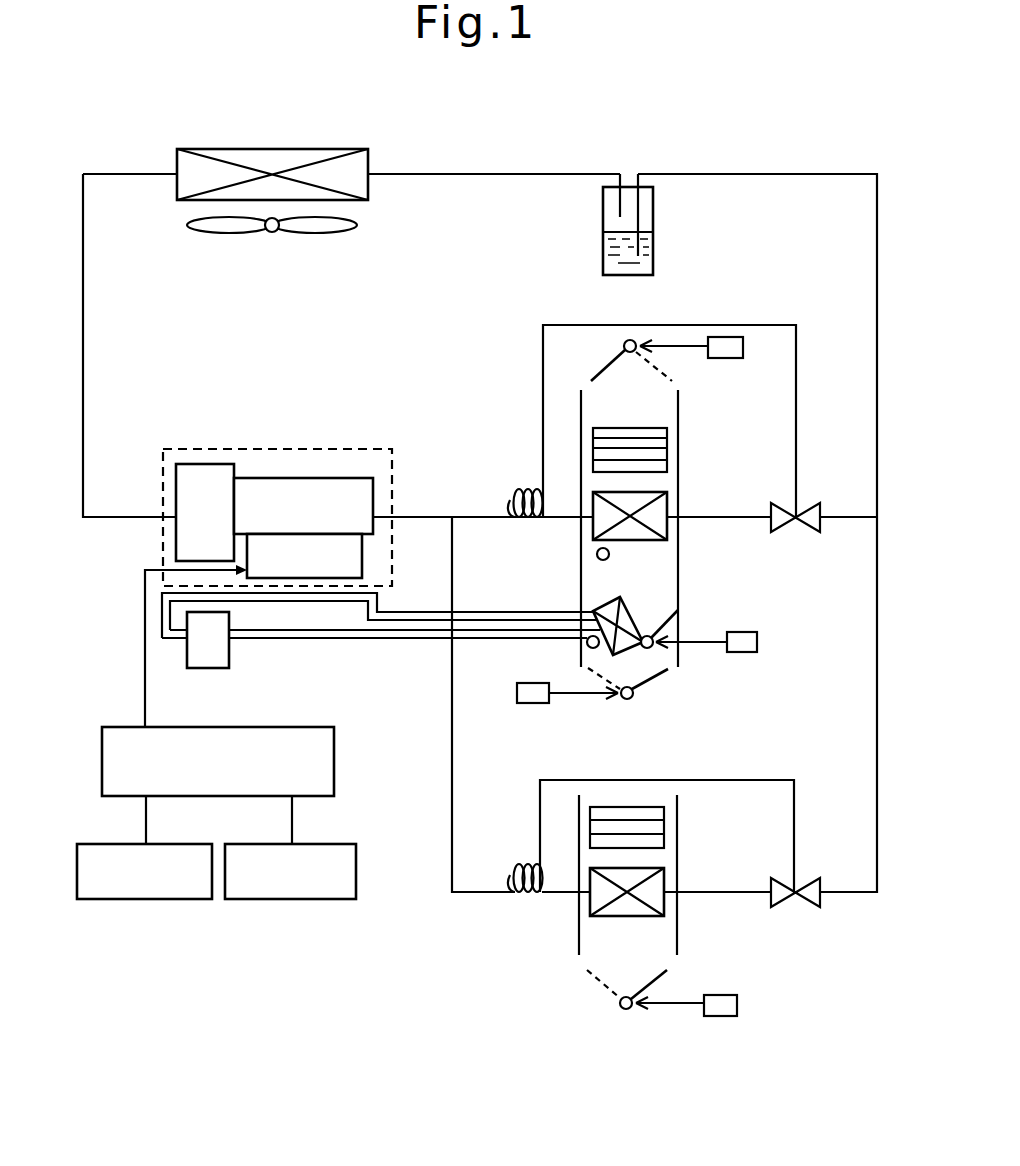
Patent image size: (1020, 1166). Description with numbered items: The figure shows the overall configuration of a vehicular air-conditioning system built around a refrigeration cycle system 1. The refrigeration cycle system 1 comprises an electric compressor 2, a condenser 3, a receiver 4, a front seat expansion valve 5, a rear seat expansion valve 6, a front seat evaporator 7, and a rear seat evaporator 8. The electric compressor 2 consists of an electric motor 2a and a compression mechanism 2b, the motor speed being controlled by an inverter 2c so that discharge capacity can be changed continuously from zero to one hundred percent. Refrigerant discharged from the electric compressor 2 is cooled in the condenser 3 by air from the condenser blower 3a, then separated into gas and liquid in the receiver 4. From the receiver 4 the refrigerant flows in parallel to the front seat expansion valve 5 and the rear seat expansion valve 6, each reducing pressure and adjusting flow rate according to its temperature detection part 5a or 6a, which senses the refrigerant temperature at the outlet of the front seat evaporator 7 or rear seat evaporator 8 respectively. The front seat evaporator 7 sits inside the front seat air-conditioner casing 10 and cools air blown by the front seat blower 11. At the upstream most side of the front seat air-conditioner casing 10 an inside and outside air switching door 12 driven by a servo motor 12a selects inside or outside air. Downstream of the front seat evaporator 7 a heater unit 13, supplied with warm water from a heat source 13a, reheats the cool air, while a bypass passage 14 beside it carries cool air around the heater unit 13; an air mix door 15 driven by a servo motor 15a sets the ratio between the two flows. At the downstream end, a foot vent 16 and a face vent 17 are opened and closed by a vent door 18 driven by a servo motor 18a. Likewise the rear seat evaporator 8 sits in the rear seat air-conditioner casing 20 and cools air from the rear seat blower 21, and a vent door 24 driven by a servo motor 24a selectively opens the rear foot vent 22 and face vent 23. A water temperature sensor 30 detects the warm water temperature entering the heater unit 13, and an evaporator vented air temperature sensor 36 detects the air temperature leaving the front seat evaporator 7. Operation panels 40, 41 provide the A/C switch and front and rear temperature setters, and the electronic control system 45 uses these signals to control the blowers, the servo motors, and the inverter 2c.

The refrigeration cycle system 1 is at (508, 167).
The electric compressor 2 is at (299, 475).
The electric motor 2a is at (302, 478).
The compression mechanism 2b is at (210, 464).
The inverter 2c is at (362, 556).
The condenser 3 is at (305, 149).
The condenser blower 3a is at (322, 238).
The receiver 4 is at (655, 218).
The front seat expansion valve 5 is at (812, 503).
The temperature detection part 5a is at (527, 488).
The rear seat expansion valve 6 is at (812, 878).
The temperature detection part 6a is at (520, 865).
The front seat evaporator 7 is at (667, 505).
The rear seat evaporator 8 is at (664, 878).
The front seat air-conditioner casing 10 is at (680, 426).
The front seat blower 11 is at (667, 455).
The inside and outside air switching door 12 is at (608, 362).
The servo motor 12a is at (745, 348).
The heater unit 13 is at (612, 600).
The heat source 13a is at (229, 652).
The bypass passage 14 is at (660, 634).
The air mix door 15 is at (672, 620).
The servo motor 15a is at (757, 634).
The foot vent 16 is at (590, 683).
The face vent 17 is at (668, 680).
The vent door 18 is at (642, 685).
The servo motor 18a is at (533, 705).
The rear seat air-conditioner casing 20 is at (677, 808).
The rear seat blower 21 is at (664, 830).
The foot vent 22 is at (608, 975).
The face vent 23 is at (645, 977).
The vent door 24 is at (658, 985).
The servo motor 24a is at (722, 1016).
The water temperature sensor 30 is at (583, 648).
The evaporator vented air temperature sensor 36 is at (597, 554).
The operation panel 40 is at (146, 900).
The operation panel 41 is at (292, 900).
The electronic control system 45 is at (334, 757).